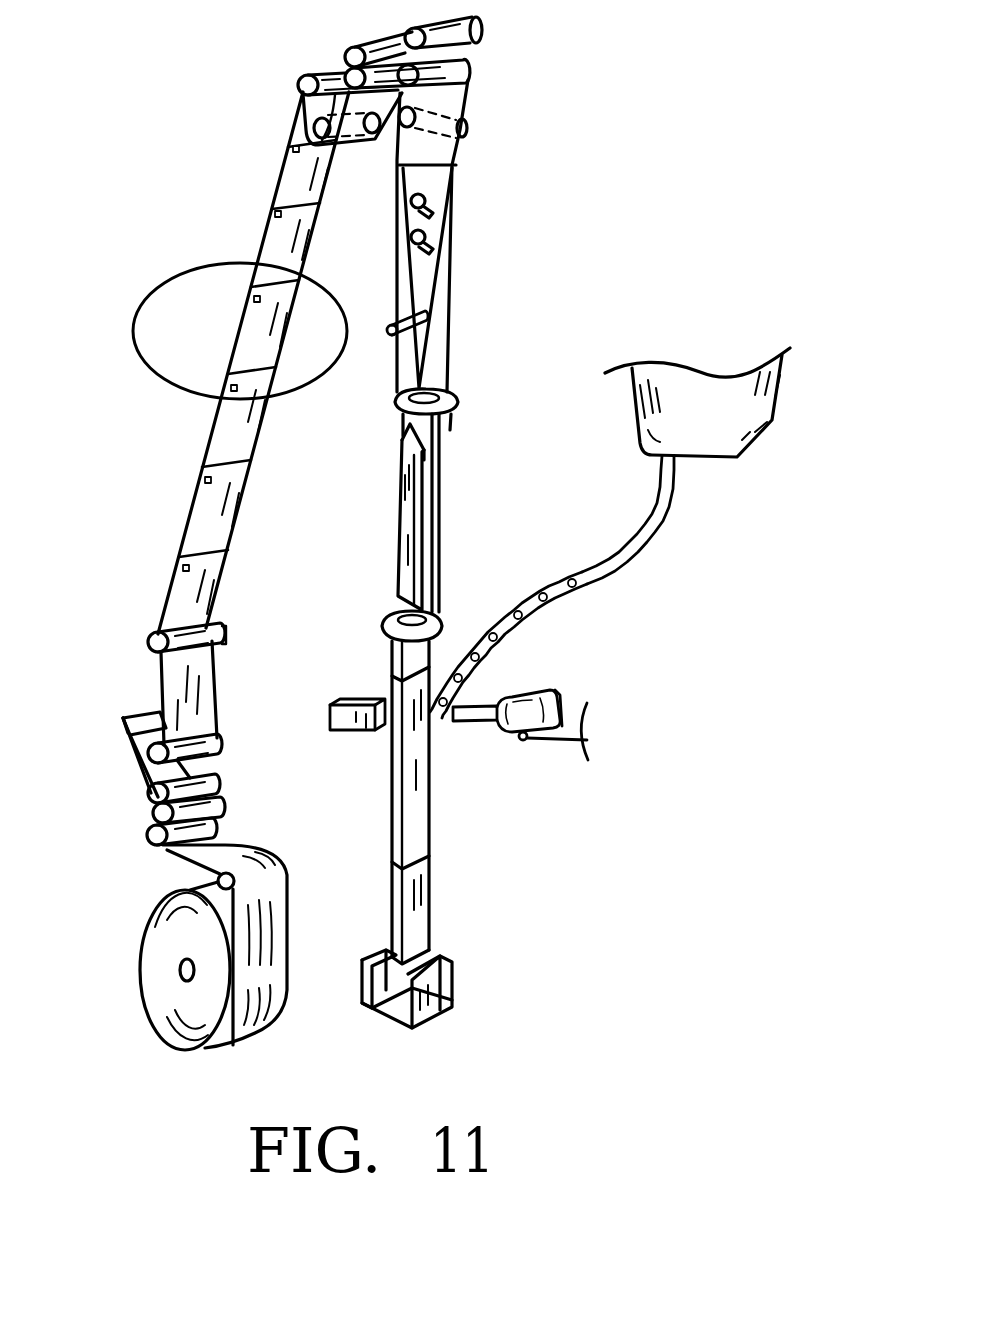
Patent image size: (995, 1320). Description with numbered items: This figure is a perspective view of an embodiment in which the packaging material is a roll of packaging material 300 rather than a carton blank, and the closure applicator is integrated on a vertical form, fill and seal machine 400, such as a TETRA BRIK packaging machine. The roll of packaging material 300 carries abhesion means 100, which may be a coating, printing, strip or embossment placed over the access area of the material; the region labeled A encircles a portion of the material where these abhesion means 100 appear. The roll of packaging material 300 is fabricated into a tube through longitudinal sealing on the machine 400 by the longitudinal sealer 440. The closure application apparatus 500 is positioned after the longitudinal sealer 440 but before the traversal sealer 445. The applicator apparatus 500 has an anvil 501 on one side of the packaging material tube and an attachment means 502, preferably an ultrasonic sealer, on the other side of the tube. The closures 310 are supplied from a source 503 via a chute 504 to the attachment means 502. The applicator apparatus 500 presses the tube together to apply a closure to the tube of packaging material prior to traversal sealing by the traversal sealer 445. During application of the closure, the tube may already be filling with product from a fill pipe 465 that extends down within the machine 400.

The abhesion means 100 is at (292, 146).
The region A is at (143, 306).
The roll of packaging material 300 is at (147, 912).
The closures 310 is at (467, 655).
The vertical form, fill and seal machine 400 is at (559, 186).
The longitudinal sealer 440 is at (413, 543).
The traversal sealer 445 is at (423, 962).
The fill pipe 465 is at (390, 325).
The closure application apparatus 500 is at (475, 797).
The anvil 501 is at (358, 700).
The attachment means 502 is at (565, 688).
The source 503 is at (773, 407).
The chute 504 is at (650, 540).